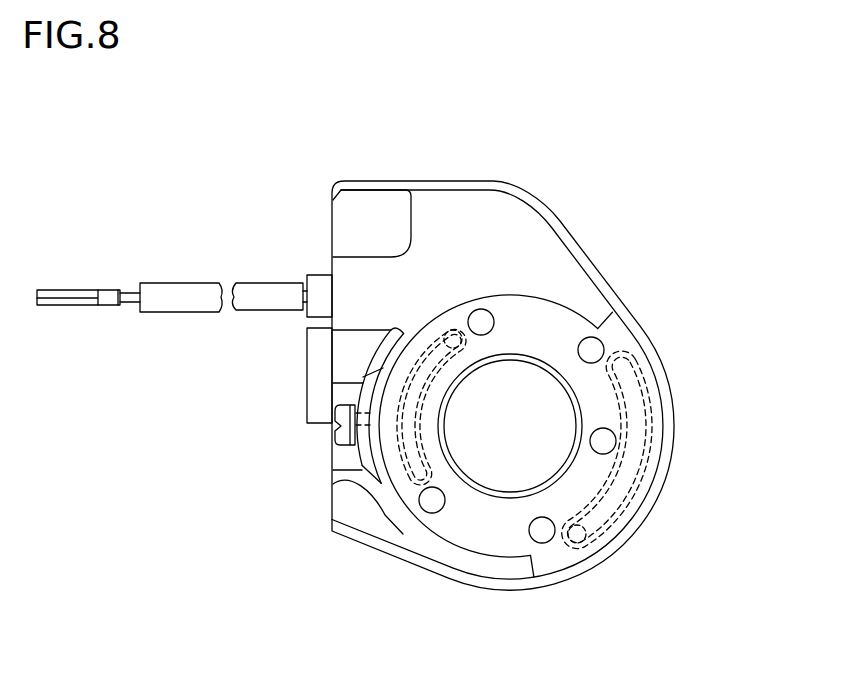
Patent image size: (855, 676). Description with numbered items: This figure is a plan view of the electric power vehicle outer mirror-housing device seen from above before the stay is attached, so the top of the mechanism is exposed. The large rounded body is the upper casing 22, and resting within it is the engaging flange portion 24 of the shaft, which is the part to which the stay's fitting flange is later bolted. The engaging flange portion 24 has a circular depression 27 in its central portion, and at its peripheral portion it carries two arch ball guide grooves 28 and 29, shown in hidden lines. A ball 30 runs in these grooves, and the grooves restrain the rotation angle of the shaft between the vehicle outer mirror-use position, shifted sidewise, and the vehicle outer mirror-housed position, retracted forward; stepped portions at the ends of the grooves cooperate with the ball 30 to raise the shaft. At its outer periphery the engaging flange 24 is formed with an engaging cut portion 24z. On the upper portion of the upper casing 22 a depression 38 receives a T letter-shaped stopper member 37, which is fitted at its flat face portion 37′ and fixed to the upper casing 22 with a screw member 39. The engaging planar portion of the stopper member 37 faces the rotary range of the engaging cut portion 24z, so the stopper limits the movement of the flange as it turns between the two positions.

The upper casing 22 is at (674, 354).
The engaging flange portion 24 is at (521, 282).
The engaging cut portion 24z is at (613, 315).
The circular depression 27 is at (527, 385).
The arch ball guide groove 28 is at (444, 328).
The arch ball guide groove 29 is at (652, 452).
The ball 30 is at (452, 330).
The stopper member 37 is at (362, 477).
The flat face portion 37′ is at (332, 212).
The depression 38 is at (341, 458).
The screw member 39 is at (342, 436).